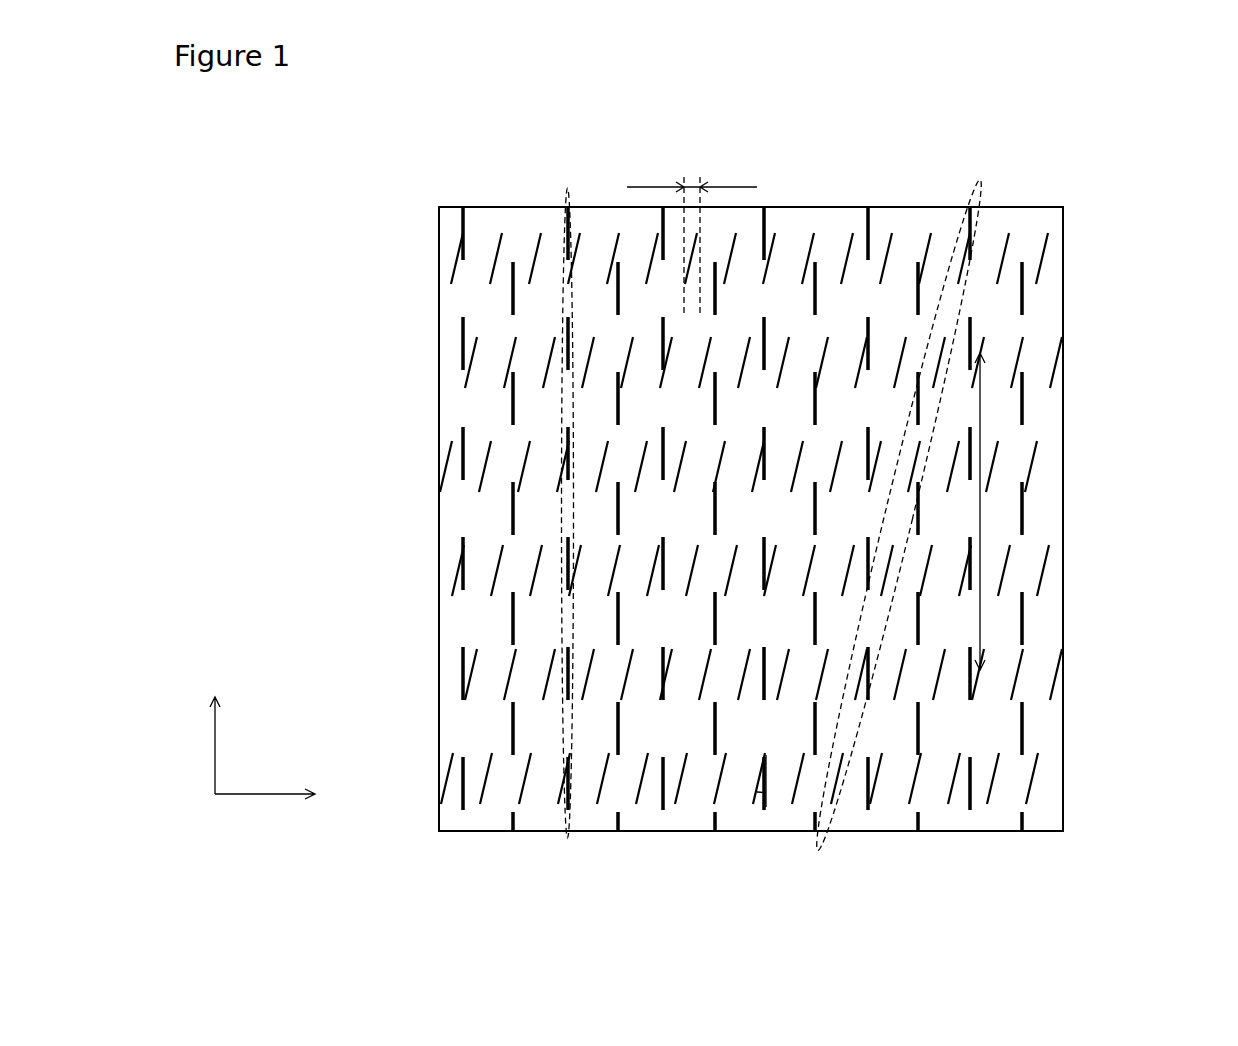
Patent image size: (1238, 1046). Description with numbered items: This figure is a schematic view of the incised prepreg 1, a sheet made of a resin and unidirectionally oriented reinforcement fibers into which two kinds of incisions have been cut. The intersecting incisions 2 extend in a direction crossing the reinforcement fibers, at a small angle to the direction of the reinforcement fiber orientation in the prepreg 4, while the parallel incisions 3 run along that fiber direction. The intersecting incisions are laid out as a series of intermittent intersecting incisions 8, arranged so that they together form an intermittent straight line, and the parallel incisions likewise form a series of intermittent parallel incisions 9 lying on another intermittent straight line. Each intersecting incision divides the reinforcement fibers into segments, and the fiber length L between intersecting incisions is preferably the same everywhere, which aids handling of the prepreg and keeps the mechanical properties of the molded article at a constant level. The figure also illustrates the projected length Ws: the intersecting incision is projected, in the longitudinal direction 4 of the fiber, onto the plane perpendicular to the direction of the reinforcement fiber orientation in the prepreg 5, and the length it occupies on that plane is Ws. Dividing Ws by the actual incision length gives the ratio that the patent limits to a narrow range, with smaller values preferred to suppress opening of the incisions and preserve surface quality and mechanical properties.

The prepreg 1 is at (1047, 513).
The intersecting incision 2 is at (1042, 265).
The parallel incision 3 is at (462, 237).
The direction of the reinforcement fiber orientation in the prepreg 4 is at (215, 748).
The plane perpendicular to the direction of the reinforcement fiber orientation in t 5 is at (268, 794).
The series of intermittent intersecting incisions 8 is at (983, 187).
The series of intermittent parallel incisions 9 is at (568, 190).
The projected length of the intersecting incision Ws is at (698, 177).
The length of the reinforcement fiber divided by the intersecting incision L is at (980, 580).